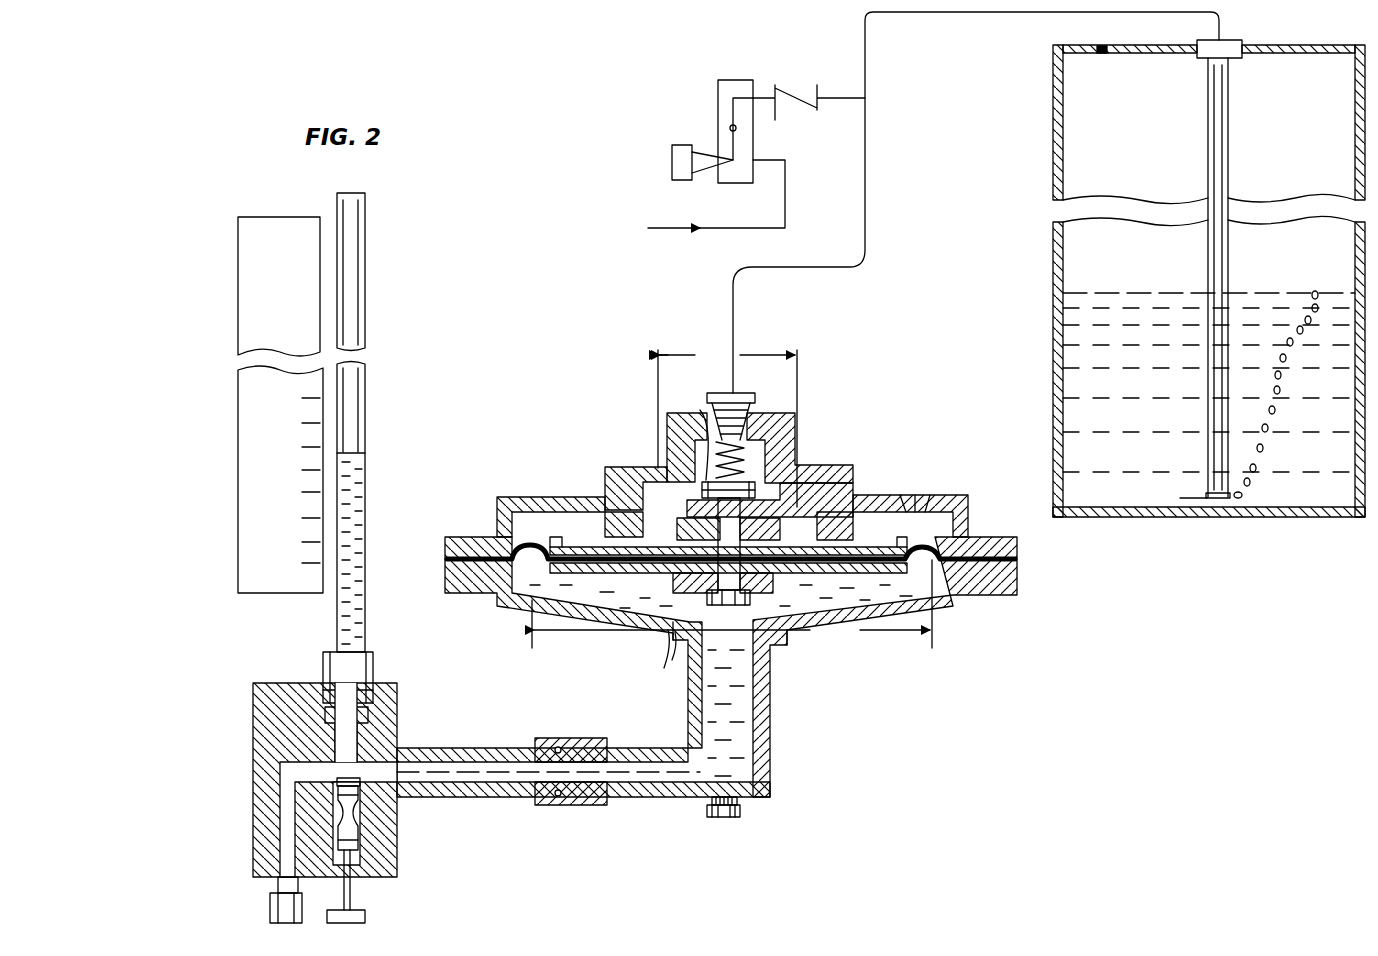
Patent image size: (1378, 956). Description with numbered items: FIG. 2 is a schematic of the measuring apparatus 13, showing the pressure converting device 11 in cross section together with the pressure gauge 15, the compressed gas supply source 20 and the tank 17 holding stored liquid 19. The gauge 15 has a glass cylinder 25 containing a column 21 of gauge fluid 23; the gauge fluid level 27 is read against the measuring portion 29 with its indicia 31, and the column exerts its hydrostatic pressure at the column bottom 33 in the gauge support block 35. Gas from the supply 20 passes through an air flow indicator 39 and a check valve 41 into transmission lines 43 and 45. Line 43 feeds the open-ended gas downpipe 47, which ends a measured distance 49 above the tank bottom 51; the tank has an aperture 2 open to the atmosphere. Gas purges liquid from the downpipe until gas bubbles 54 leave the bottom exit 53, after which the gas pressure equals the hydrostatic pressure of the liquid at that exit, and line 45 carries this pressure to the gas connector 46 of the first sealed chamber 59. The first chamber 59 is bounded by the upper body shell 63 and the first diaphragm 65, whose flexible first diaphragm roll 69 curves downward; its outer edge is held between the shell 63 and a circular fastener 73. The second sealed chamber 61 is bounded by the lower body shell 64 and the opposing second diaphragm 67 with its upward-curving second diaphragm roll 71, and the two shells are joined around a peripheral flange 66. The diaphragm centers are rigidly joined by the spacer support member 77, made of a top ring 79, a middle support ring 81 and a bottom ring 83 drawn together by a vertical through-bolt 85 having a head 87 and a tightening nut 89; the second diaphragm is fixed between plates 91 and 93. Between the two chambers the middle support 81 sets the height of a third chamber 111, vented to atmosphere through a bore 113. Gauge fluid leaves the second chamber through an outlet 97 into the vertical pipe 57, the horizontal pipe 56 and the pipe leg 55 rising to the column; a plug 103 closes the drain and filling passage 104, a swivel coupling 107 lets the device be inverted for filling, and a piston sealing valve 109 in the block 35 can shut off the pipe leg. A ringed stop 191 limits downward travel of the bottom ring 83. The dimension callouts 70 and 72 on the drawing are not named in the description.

The aperture 2 is at (1100, 44).
The pressure converting device 11 is at (729, 600).
The apparatus 13 is at (718, 446).
The pressure gauge 15 is at (391, 760).
The tank 17 is at (1196, 289).
The stored liquid 19 is at (1145, 507).
The compressed gas supply source 20 is at (660, 228).
The column 21 is at (370, 490).
The gauge fluid 23 is at (360, 622).
The glass cylinder 25 is at (367, 440).
The gauge fluid level 27 is at (365, 453).
The measuring portion 29 is at (250, 447).
The indicia 31 is at (283, 518).
The column bottom 33 is at (345, 768).
The gauge support block 35 is at (262, 862).
The air flow indicator 39 is at (733, 128).
The check valve 41 is at (815, 90).
The gas transmission line 43 is at (862, 22).
The gas transmission line 45 is at (865, 255).
The gas connector 46 is at (770, 372).
The gas downpipe 47 is at (1230, 133).
The measured distance 49 is at (1195, 497).
The tank bottom 51 is at (1303, 512).
The bottom exit 53 is at (1230, 493).
The gas bubbles 54 is at (1282, 377).
The horizontal pipe leg 55 is at (478, 722).
The horizontal gauge fluid transfer pipe 56 is at (660, 732).
The vertical pipe 57 is at (773, 724).
The first closed chamber 59 is at (770, 460).
The second closed chamber 61 is at (753, 653).
The upper body shell 63 is at (958, 497).
The lower body shell 64 is at (998, 596).
The first diaphragm 65 is at (604, 492).
The peripheral flange 66 is at (482, 536).
The second diaphragm 67 is at (447, 558).
The first diaphragm roll 69 is at (620, 468).
The diameter D1 70 is at (803, 367).
The second diaphragm roll 71 is at (530, 505).
The diameter D2 72 is at (530, 626).
The circular fastener 73 is at (853, 535).
The spacer support member 77 is at (680, 585).
The top ring 79 is at (808, 483).
The middle support ring 81 is at (770, 535).
The bottom ring 83 is at (782, 588).
The vertical through-bolt 85 is at (752, 458).
The head 87 is at (752, 615).
The tightening nut 89 is at (700, 412).
The plate 91 is at (585, 520).
The plate 93 is at (555, 575).
The outlet 97 is at (770, 698).
The plug 103 is at (738, 818).
The passage 104 is at (745, 798).
The swivel coupling 107 is at (597, 805).
The piston sealing valve 109 is at (368, 830).
The third chamber 111 is at (940, 530).
The bore 113 is at (922, 500).
The ringed stop 191 is at (672, 645).